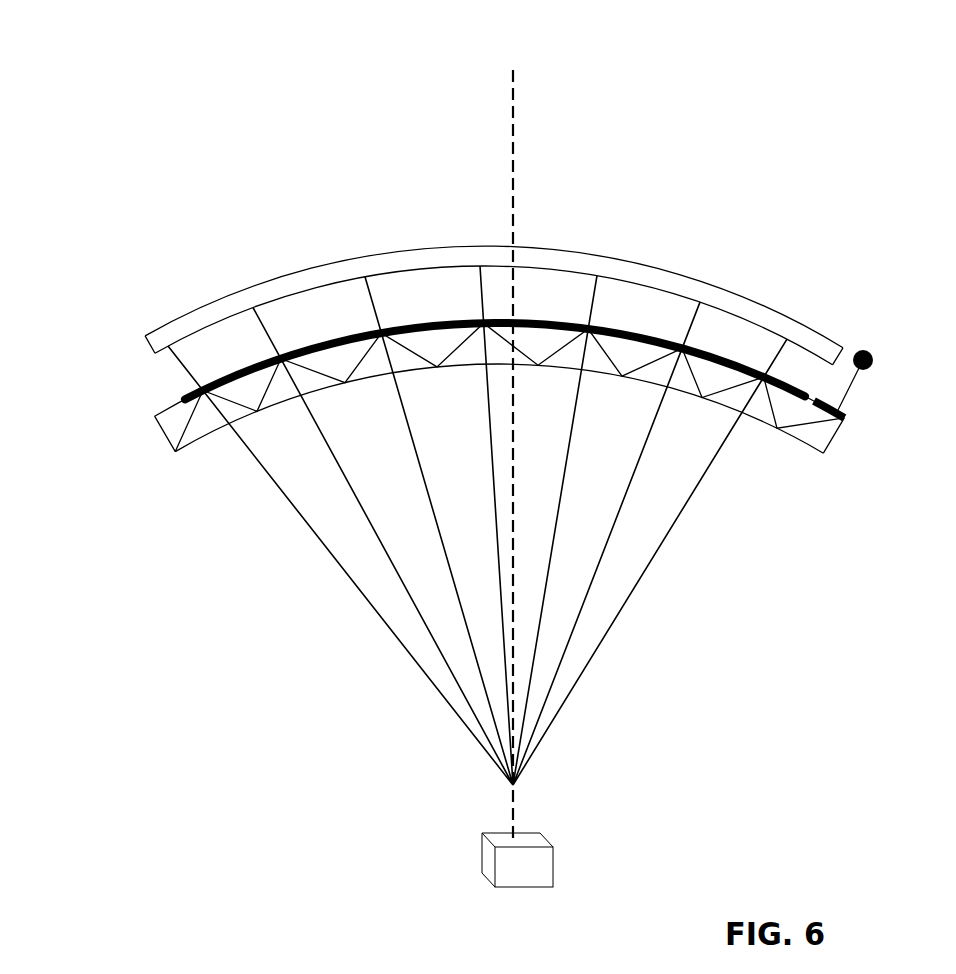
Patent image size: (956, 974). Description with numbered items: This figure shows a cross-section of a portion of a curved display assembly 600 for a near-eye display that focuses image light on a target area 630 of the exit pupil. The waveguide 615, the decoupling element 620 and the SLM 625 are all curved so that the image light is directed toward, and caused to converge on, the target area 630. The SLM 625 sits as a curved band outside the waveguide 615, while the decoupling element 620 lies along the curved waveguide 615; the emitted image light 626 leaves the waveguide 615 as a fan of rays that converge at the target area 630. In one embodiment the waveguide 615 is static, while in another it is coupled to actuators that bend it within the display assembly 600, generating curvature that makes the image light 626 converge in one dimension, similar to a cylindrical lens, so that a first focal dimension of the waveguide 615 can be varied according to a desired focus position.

The display assembly 600 is at (162, 178).
The SLM 625 is at (742, 305).
The waveguide 615 is at (177, 458).
The decoupling element 620 is at (183, 398).
The image light 626 is at (298, 562).
The target area 630 is at (483, 833).